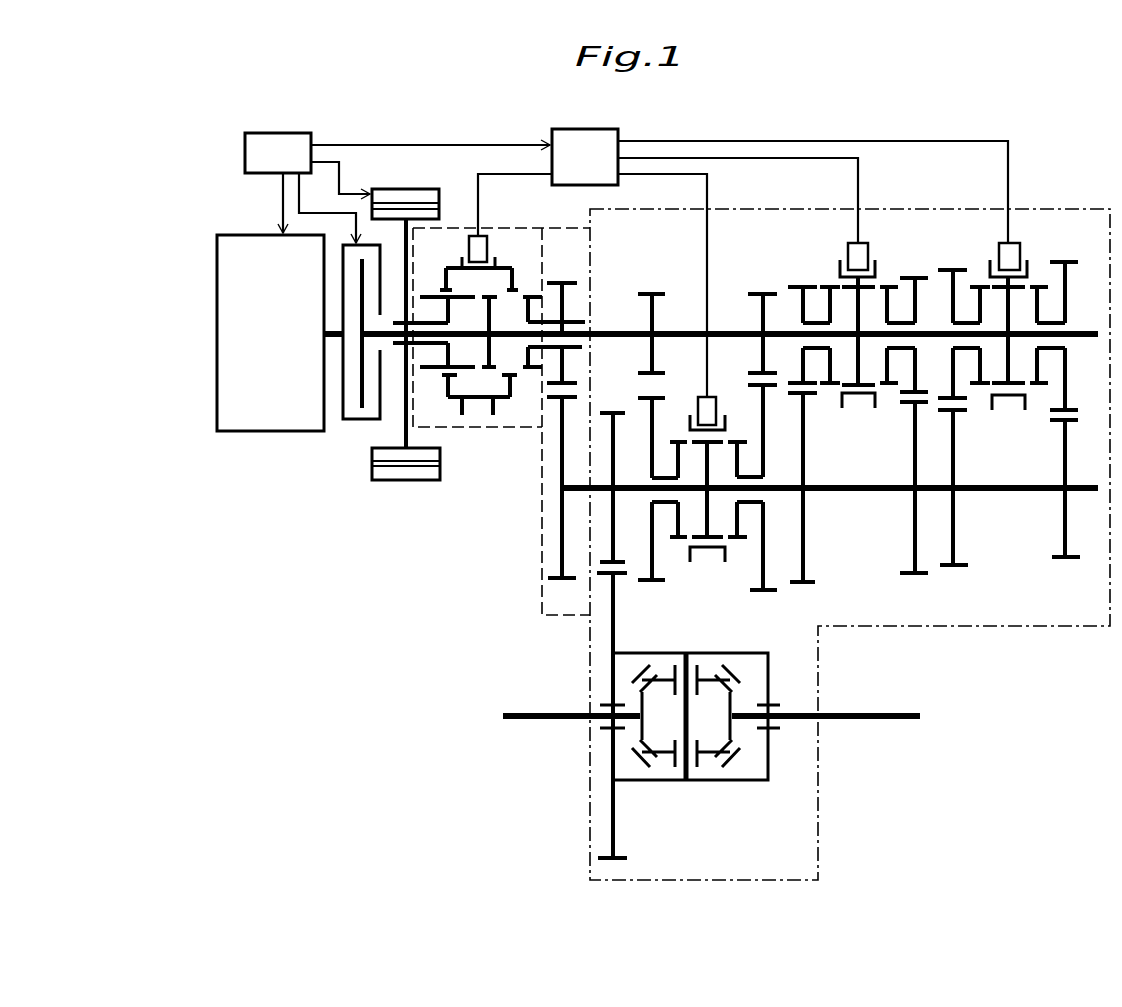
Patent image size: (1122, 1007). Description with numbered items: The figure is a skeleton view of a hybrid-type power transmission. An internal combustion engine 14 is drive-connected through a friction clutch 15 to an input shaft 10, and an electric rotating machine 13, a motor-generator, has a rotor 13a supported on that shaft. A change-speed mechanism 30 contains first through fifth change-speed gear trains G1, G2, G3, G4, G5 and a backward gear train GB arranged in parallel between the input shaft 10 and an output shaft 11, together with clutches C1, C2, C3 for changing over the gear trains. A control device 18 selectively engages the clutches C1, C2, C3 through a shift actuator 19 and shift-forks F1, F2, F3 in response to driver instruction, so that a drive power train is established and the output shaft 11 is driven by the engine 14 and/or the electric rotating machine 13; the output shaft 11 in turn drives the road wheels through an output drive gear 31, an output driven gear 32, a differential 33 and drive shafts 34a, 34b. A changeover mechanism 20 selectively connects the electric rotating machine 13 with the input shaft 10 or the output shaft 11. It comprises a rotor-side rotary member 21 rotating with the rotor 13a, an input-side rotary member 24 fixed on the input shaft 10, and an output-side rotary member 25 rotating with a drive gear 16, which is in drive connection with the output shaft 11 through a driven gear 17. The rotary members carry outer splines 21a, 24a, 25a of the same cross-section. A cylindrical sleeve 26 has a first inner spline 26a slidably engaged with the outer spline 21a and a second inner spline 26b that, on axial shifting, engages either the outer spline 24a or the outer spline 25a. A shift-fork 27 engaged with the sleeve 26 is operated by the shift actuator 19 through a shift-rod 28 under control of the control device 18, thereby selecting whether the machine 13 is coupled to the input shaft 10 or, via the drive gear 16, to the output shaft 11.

The input shaft 10 is at (607, 329).
The output shaft 11 is at (620, 484).
The electric rotating machine 13 is at (415, 480).
The rotor 13a is at (403, 423).
The internal combustion engine 14 is at (270, 424).
The friction clutch 15 is at (353, 421).
The drive gear 16 is at (567, 360).
The driven gear 17 is at (556, 463).
The control device 18 is at (256, 168).
The shift actuator 19 is at (577, 179).
The changeover mechanism 20 is at (480, 418).
The rotor-side rotary member 21 is at (450, 358).
The outer spline 21a is at (437, 372).
The input-side rotary member 24 is at (493, 313).
The outer spline 24a is at (500, 297).
The output-side rotary member 25 is at (537, 373).
The outer spline 25a is at (537, 295).
The sleeve 26 is at (495, 417).
The first inner spline 26a is at (445, 289).
The second inner spline 26b is at (513, 291).
The shift-fork 27 is at (483, 237).
The shift-rod 28 is at (507, 173).
The change-speed mechanism 30 is at (987, 627).
The output drive gear 31 is at (617, 512).
The output driven gear 32 is at (615, 597).
The differential 33 is at (723, 782).
The drive shaft 34a is at (541, 712).
The drive shaft 34b is at (878, 713).
The backward gear train GB is at (659, 285).
The first change-speed gear train G1 is at (754, 285).
The second change-speed gear train G2 is at (802, 592).
The third change-speed gear train G3 is at (916, 272).
The fourth change-speed gear train G4 is at (954, 574).
The fifth change-speed gear train G5 is at (1064, 567).
The shift-fork F1 is at (713, 413).
The shift-fork F2 is at (848, 253).
The shift-fork F3 is at (1013, 257).
The clutch C1 is at (708, 557).
The clutch C2 is at (859, 406).
The clutch C3 is at (1009, 409).